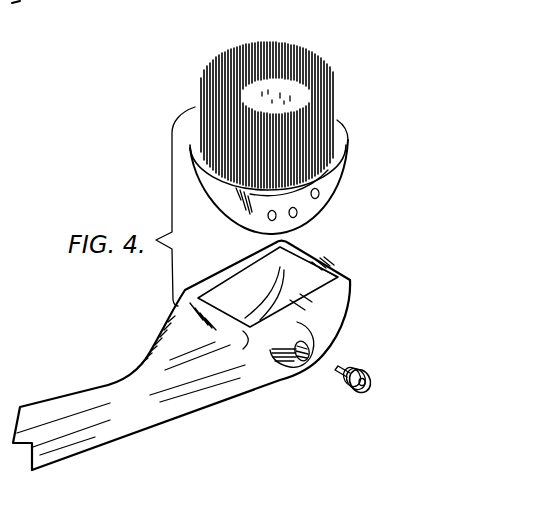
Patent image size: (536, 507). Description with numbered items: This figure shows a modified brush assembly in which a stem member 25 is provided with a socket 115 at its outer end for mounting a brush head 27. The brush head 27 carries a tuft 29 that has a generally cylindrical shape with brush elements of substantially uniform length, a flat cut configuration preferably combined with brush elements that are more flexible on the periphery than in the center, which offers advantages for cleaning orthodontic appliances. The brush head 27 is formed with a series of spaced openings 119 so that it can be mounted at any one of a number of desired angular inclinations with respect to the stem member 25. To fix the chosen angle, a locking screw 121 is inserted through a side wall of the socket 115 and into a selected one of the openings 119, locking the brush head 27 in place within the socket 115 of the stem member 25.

The stem member 25 is at (182, 405).
The brush head 27 is at (329, 177).
The tuft 29 is at (202, 78).
The socket 115 is at (322, 258).
The spaced openings 119 is at (297, 212).
The locking screw 121 is at (347, 365).